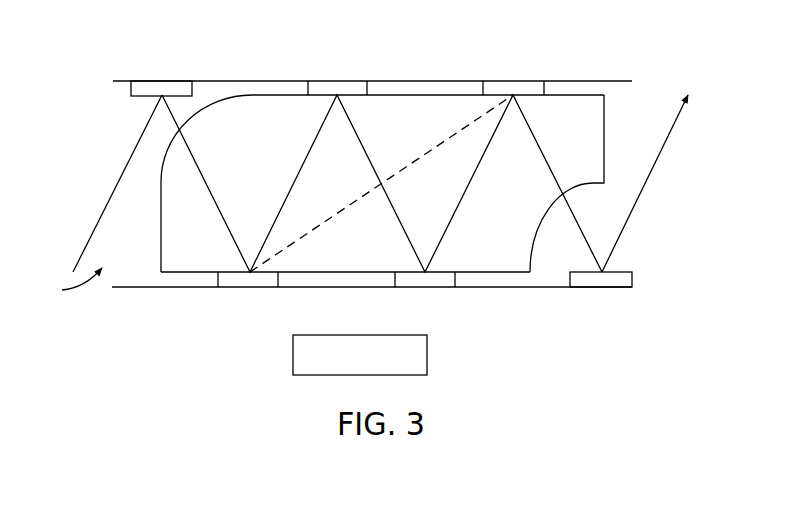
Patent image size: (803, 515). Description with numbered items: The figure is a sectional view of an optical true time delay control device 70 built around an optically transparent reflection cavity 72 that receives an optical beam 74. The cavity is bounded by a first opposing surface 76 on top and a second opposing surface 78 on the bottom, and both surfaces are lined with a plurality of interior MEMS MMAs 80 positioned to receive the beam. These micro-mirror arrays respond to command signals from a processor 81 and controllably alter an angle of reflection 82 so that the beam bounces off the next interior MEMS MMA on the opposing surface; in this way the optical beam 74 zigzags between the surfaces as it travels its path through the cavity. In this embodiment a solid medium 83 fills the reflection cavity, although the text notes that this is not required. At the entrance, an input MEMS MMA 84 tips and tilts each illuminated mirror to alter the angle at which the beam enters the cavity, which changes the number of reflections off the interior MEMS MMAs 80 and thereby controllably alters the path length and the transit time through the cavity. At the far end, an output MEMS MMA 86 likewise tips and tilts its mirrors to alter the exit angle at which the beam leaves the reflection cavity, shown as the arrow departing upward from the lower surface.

The optical TTD control device 70 is at (598, 35).
The optically transparent reflection cavity 72 is at (71, 286).
The optical beam 74 is at (100, 222).
The first opposing surface 76 is at (258, 79).
The second opposing surface 78 is at (517, 291).
The interior MEMS MMAs 80 is at (340, 78).
The processor 81 is at (428, 353).
The angle of reflection 82 is at (244, 276).
The solid medium 83 is at (349, 181).
The input MEMS MMA 84 is at (160, 80).
The output MEMS MMA 86 is at (599, 288).